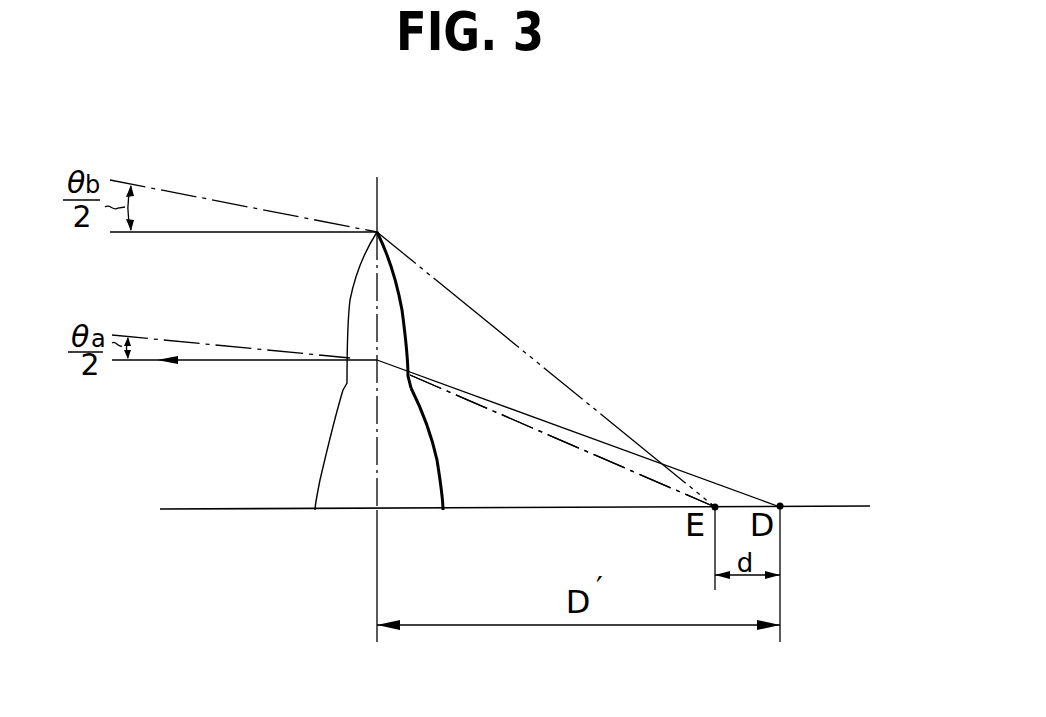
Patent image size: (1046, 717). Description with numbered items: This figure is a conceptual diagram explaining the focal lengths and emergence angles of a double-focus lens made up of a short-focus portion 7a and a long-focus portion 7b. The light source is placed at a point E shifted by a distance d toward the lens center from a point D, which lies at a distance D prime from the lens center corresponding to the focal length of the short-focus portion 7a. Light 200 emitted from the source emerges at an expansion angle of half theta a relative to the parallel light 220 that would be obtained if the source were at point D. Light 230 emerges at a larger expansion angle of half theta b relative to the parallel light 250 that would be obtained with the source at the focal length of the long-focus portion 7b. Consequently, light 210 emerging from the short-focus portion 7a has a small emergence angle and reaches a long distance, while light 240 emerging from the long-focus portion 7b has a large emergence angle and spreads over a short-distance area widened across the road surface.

The short-focus portion 7a is at (323, 480).
The long-focus portion 7b is at (397, 298).
The light 200 is at (502, 415).
The light emerging from the short-focus portion 210 is at (173, 337).
The parallel light 220 is at (197, 361).
The light 230 is at (570, 388).
The light emerging from the long-focus portion 240 is at (256, 208).
The parallel light 250 is at (274, 234).